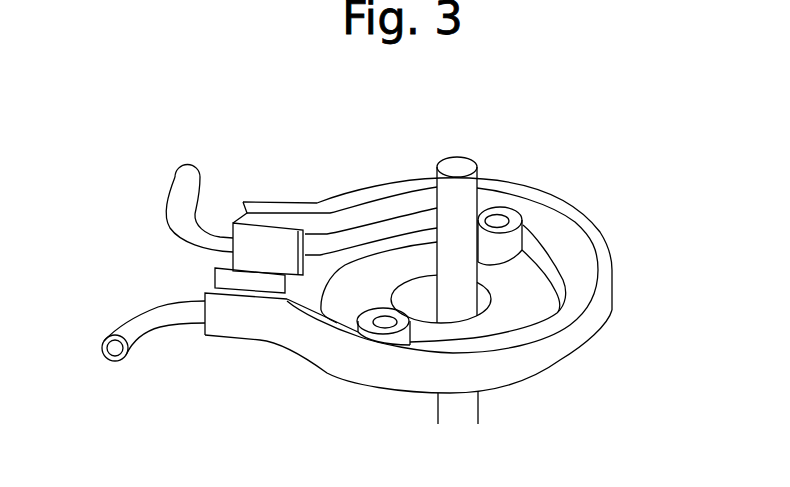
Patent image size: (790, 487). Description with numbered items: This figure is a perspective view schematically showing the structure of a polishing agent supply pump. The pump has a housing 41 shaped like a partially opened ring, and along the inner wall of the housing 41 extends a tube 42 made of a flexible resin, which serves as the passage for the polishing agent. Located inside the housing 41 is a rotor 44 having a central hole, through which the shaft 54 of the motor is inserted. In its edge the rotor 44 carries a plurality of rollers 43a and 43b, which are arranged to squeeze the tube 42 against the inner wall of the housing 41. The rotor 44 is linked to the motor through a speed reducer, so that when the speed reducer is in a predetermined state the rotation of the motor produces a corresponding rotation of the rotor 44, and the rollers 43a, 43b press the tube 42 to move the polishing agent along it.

The housing 41 is at (610, 312).
The tube 42 is at (167, 197).
The roller 43a is at (515, 212).
The roller 43b is at (367, 333).
The rotor 44 is at (381, 245).
The shaft 54 is at (468, 157).